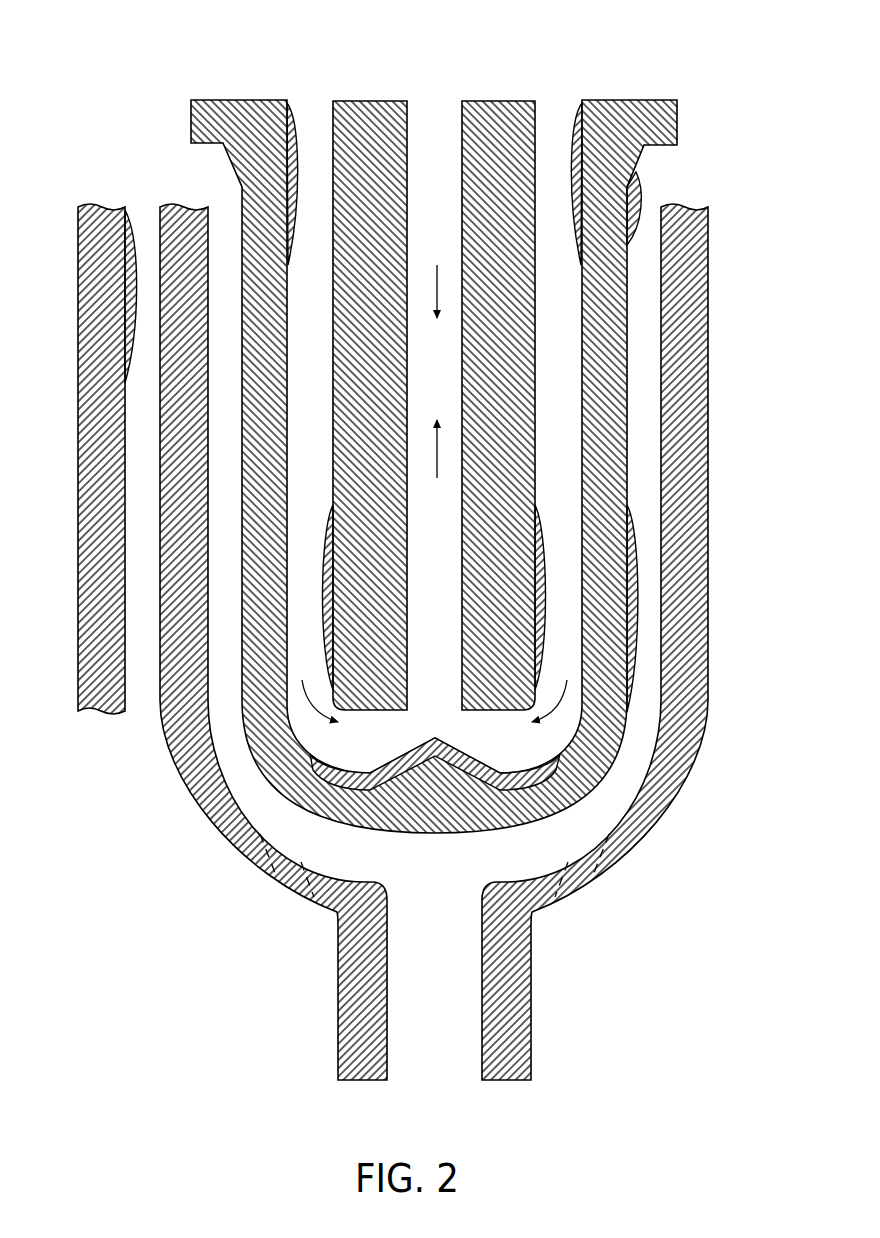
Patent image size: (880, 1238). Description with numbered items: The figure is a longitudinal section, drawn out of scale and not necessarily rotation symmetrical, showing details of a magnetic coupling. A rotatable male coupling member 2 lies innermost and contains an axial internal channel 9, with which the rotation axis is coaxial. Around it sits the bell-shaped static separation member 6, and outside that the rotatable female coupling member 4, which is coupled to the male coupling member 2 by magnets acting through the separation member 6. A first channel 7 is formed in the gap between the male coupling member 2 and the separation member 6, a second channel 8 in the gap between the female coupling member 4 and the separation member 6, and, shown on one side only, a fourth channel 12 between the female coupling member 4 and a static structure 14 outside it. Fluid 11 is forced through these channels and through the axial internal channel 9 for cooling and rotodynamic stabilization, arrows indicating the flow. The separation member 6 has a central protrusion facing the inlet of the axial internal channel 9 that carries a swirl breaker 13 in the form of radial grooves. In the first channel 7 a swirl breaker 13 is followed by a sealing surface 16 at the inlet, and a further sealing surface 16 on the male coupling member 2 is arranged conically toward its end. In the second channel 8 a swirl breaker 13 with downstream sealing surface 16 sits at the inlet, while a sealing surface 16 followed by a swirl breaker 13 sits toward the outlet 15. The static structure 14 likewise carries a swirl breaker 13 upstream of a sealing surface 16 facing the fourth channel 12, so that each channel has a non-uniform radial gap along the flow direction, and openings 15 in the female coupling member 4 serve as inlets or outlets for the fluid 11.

The rotatable male coupling member 2 is at (376, 102).
The rotatable female coupling member 4 is at (147, 225).
The static separation member 6 is at (625, 125).
The first channel 7 is at (433, 381).
The second channel 8 is at (428, 478).
The axial internal channel 9 is at (437, 128).
The fluid 11 is at (145, 213).
The fourth channel 12 is at (140, 521).
The swirl breaker 13 is at (290, 108).
The static structure 14 is at (88, 480).
The openings 15 is at (272, 880).
The sealing surface 16 is at (293, 262).